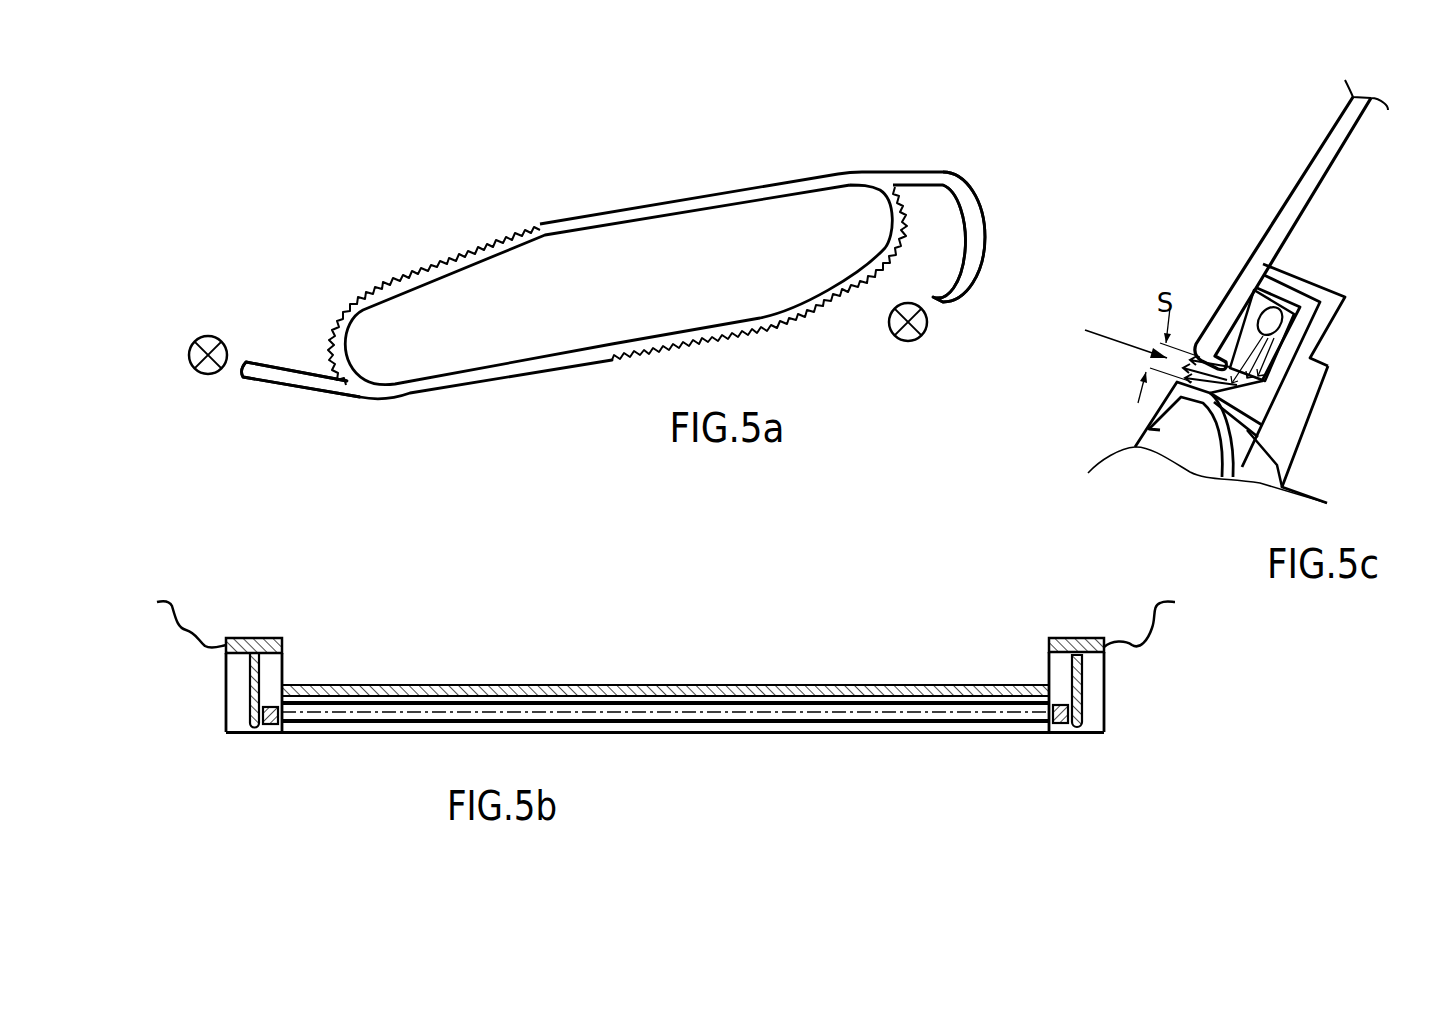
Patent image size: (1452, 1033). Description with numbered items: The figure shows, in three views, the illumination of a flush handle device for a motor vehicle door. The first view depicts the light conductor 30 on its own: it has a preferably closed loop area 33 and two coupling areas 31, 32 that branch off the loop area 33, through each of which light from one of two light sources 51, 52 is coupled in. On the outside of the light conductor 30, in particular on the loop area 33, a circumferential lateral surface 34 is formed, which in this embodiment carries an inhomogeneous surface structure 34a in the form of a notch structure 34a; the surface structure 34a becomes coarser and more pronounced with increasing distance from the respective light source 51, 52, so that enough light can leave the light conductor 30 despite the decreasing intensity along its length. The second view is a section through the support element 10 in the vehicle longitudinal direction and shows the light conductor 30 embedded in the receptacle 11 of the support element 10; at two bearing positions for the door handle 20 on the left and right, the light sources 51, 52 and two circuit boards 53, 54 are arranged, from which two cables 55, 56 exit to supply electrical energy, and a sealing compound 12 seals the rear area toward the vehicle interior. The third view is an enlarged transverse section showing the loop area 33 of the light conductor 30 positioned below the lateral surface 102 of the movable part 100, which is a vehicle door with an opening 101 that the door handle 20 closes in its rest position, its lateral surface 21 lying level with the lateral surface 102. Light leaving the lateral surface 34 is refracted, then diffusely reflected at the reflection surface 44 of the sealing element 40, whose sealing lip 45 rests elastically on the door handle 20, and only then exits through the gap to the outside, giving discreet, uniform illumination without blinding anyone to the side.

In FIG. 5b, the support element 10 is at (661, 738).
In FIG. 5c, the support element 10 is at (1307, 379).
In FIG. 5c, the receptacle 11 is at (1248, 422).
In FIG. 5b, the sealing compound 12 is at (283, 641).
In FIG. 5c, the door handle 20 is at (1187, 470).
In FIG. 5c, the lateral surface of the door handle 21 is at (1140, 430).
In FIG. 5a, the light conductor 30 is at (648, 250).
In FIG. 5b, the light conductor 30 is at (822, 712).
In FIG. 5c, the light conductor 30 is at (1316, 320).
In FIG. 5a, the coupling area 31 is at (980, 223).
In FIG. 5a, the coupling area 32 is at (279, 372).
In FIG. 5a, the loop area 33 is at (720, 203).
In FIG. 5c, the loop area 33 is at (1290, 307).
In FIG. 5a, the lateral surface 34 is at (605, 212).
In FIG. 5c, the lateral surface 34 is at (1262, 318).
In FIG. 5a, the surface structure 34a is at (360, 293).
In FIG. 5c, the sealing element 40 is at (1302, 323).
In FIG. 5c, the reflection surface 44 is at (1238, 380).
In FIG. 5c, the sealing lip 45 is at (1255, 440).
In FIG. 5a, the light source 51 is at (912, 333).
In FIG. 5b, the light source 51 is at (275, 725).
In FIG. 5a, the light source 52 is at (207, 336).
In FIG. 5b, the light source 52 is at (1060, 725).
In FIG. 5b, the circuit board 53 is at (248, 720).
In FIG. 5b, the circuit board 54 is at (1078, 680).
In FIG. 5b, the cable 55 is at (178, 602).
In FIG. 5b, the cable 56 is at (1157, 625).
In FIG. 5c, the movable part 100 is at (1291, 215).
In FIG. 5c, the opening 101 is at (1102, 335).
In FIG. 5c, the lateral surface of the movable part 102 is at (1307, 160).